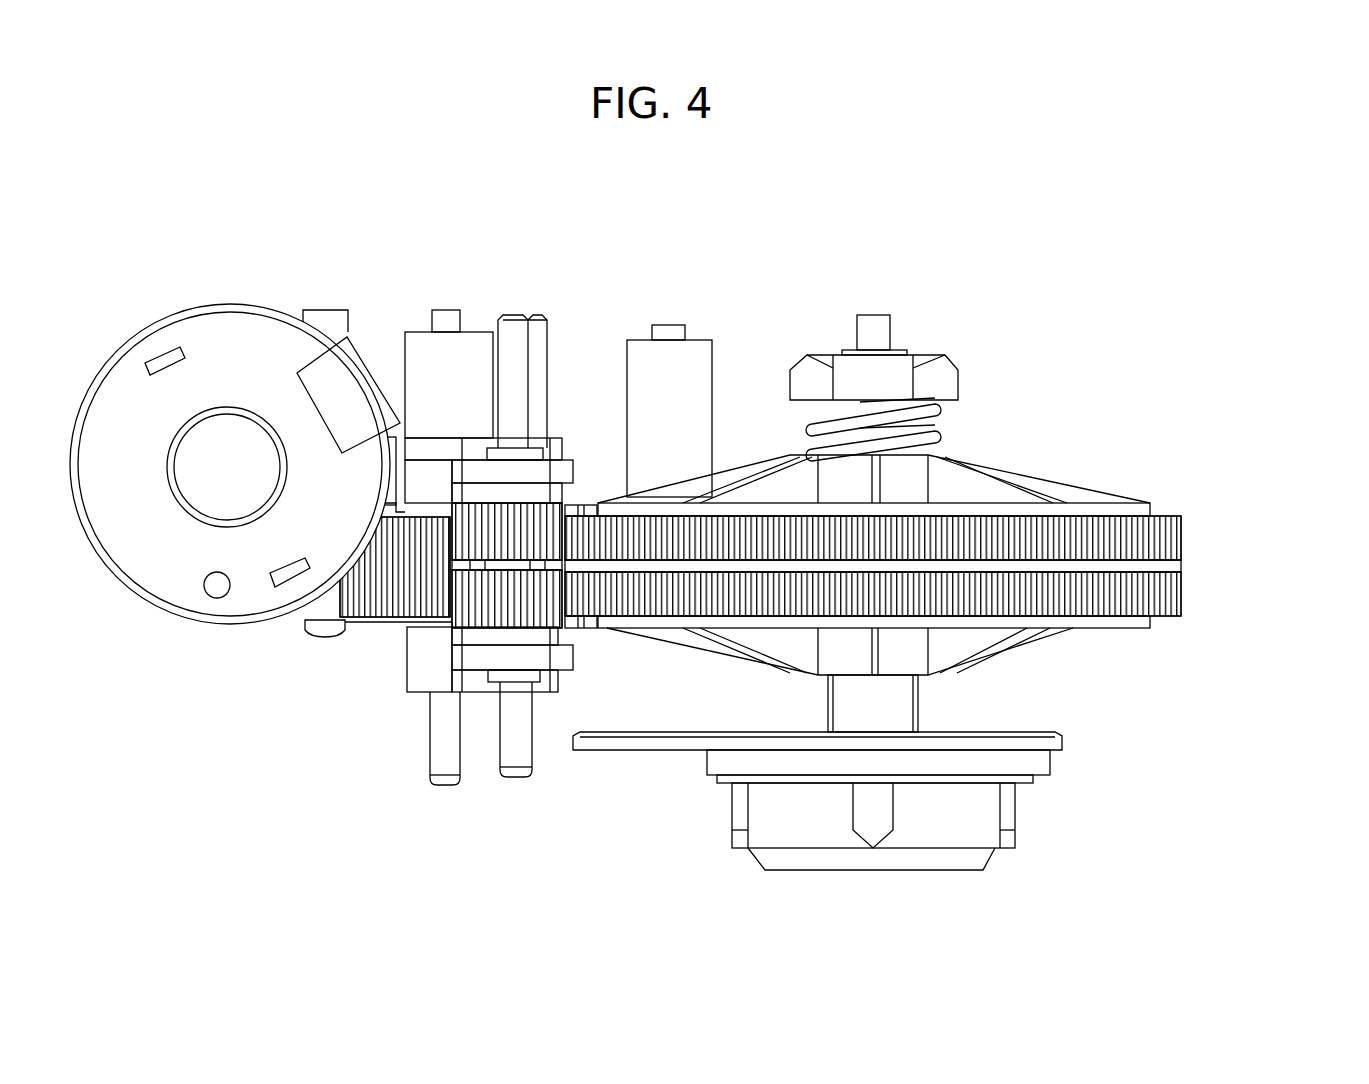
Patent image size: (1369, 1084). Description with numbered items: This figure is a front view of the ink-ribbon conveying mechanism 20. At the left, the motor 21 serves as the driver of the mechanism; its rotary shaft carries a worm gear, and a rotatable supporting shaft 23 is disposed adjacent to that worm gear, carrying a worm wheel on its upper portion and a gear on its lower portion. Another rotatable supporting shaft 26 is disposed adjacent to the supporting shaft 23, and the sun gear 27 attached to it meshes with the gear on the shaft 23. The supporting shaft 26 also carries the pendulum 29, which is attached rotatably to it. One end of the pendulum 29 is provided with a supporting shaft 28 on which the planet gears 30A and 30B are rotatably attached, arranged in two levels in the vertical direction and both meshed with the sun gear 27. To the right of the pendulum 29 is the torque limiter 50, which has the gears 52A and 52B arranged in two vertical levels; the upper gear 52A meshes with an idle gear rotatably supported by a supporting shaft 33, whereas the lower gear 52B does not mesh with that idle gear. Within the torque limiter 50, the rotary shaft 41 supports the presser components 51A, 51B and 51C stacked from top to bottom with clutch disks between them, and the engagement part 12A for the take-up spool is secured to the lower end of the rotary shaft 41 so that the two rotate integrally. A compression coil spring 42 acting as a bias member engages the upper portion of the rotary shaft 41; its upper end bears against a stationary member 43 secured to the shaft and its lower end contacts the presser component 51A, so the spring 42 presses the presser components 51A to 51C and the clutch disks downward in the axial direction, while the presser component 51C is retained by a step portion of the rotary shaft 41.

The engagement part 12A is at (857, 872).
The ink-ribbon conveying mechanism 20 is at (1076, 311).
The motor 21 is at (182, 587).
The supporting shaft 23 is at (325, 323).
The supporting shaft 26 is at (452, 325).
The sun gear 27 is at (400, 590).
The supporting shaft 28 is at (535, 325).
The pendulum 29 is at (440, 470).
The planet gear 30A is at (575, 500).
The planet gear 30B is at (550, 603).
The supporting shaft 33 is at (682, 325).
The rotary shaft 41 is at (872, 312).
The spring 42 is at (935, 435).
The stationary member 43 is at (960, 378).
The torque limiter 50 is at (952, 558).
The presser component 51A is at (1078, 487).
The presser component 51B is at (1150, 563).
The presser component 51C is at (1078, 642).
The gear 52A is at (1181, 540).
The gear 52B is at (1181, 585).